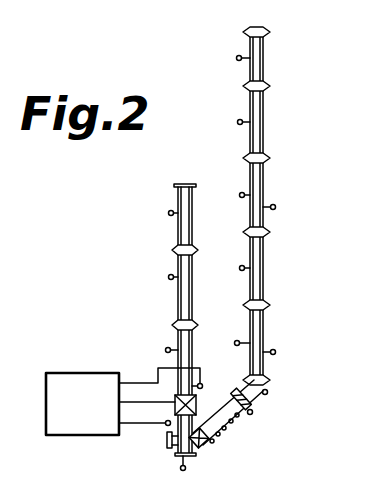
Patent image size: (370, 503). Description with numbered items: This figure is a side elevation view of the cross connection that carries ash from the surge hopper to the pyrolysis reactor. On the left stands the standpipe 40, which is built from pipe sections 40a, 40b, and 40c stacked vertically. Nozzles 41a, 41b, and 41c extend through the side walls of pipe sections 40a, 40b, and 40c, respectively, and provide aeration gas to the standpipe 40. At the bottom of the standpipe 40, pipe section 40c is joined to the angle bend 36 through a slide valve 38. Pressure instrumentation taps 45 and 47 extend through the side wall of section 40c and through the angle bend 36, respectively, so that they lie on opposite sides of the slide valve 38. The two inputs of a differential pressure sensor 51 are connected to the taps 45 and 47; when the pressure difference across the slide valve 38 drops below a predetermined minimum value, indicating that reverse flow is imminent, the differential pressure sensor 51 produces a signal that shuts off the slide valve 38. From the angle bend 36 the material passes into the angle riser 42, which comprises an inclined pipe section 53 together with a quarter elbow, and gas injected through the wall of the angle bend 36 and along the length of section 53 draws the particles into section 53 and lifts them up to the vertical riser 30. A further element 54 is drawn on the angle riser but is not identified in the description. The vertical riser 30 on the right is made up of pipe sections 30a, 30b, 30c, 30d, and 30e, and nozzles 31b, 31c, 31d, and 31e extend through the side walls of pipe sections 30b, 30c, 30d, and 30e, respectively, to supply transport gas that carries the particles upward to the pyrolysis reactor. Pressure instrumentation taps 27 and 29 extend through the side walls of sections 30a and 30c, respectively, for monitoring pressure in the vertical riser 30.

The pressure instrumentation tap 27 is at (276, 352).
The pressure instrumentation tap 29 is at (276, 207).
The vertical riser 30 is at (292, 206).
The pipe section 30a is at (264, 330).
The pipe section 30b is at (264, 281).
The pipe section 30c is at (264, 190).
The pipe section 30d is at (264, 125).
The pipe section 30e is at (264, 62).
The nozzle 31b is at (240, 268).
The nozzle 31c is at (240, 194).
The nozzle 31d is at (237, 122).
The nozzle 31e is at (236, 58).
The angle bend 36 is at (176, 457).
The slide valve 38 is at (205, 424).
The standpipe 40 is at (165, 318).
The pipe section 40a is at (193, 224).
The pipe section 40b is at (193, 281).
The pipe section 40c is at (235, 342).
The nozzle 41a is at (168, 213).
The nozzle 41b is at (168, 277).
The nozzle 41c is at (165, 350).
The angle riser 42 is at (232, 436).
The pressure instrumentation tap 45 is at (204, 382).
The pressure instrumentation tap 47 is at (166, 425).
The differential pressure sensor 51 is at (84, 358).
The pipe section 53 is at (253, 414).
The orifice flange 54 is at (268, 392).